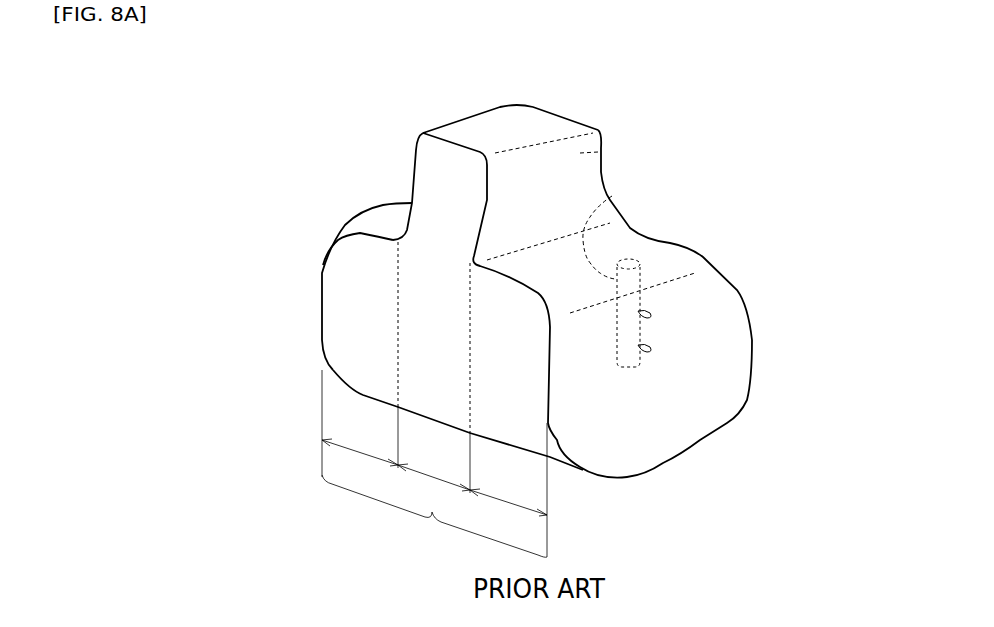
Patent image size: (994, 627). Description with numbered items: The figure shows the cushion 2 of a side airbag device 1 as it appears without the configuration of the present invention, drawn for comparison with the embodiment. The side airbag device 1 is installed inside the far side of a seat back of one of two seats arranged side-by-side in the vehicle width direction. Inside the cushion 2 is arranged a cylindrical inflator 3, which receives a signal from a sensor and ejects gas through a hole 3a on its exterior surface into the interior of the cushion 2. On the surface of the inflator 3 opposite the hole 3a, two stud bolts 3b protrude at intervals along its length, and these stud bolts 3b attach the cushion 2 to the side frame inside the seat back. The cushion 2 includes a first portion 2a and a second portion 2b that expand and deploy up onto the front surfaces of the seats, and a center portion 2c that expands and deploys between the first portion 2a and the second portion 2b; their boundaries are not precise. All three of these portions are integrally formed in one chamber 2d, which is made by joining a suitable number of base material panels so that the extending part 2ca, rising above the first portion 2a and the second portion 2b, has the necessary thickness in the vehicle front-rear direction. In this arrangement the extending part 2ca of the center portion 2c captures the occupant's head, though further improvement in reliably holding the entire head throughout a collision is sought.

The side airbag device 1 is at (660, 192).
The cushion 2 is at (652, 225).
The extending part 2ca is at (603, 150).
The first portion 2a is at (508, 490).
The second portion 2b is at (360, 423).
The center portion 2c is at (434, 463).
The chamber 2d is at (434, 516).
The inflator 3 is at (643, 283).
The hole 3a is at (603, 206).
The stud bolts 3b is at (660, 314).